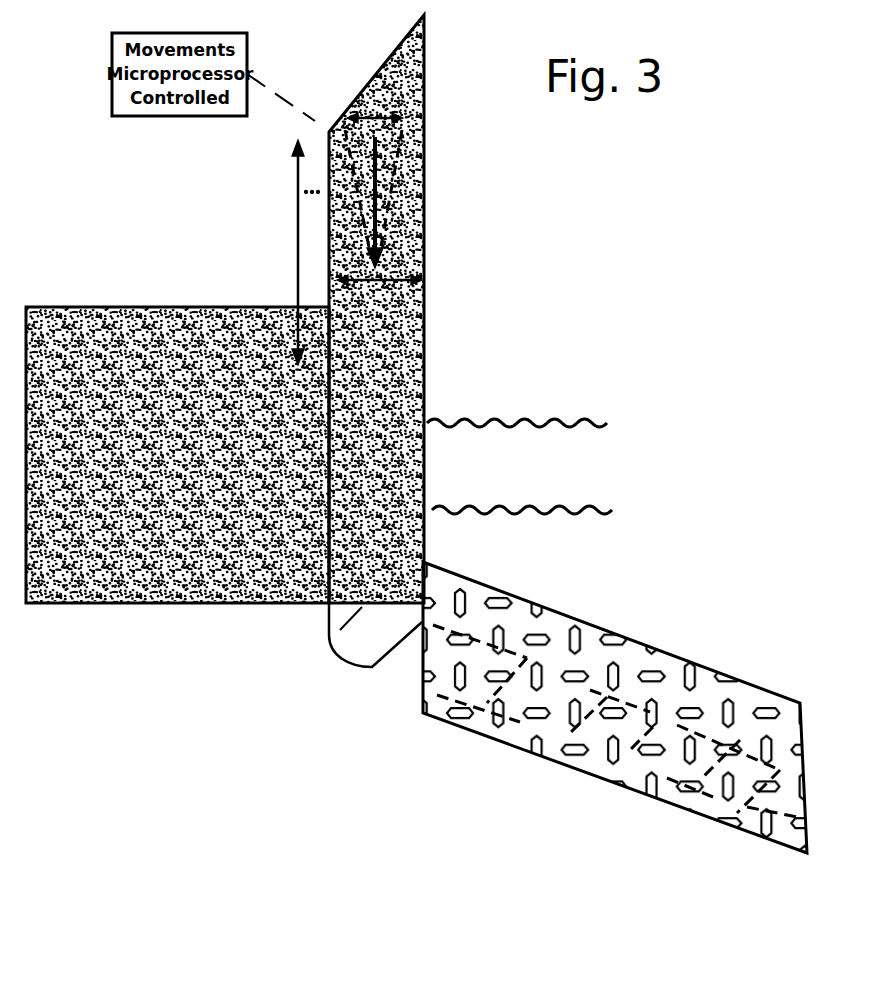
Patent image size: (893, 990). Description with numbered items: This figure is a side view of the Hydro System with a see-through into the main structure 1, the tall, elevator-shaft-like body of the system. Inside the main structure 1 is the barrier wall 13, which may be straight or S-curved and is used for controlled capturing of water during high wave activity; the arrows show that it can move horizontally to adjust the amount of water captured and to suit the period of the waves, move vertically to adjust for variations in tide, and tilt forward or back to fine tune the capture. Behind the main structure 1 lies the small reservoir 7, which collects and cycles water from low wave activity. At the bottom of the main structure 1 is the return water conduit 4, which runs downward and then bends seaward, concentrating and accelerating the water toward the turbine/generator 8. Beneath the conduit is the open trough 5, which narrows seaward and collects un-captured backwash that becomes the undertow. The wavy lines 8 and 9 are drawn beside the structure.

The main structure 1 is at (443, 325).
The return water conduit 4 is at (318, 648).
The open trough 5 is at (682, 641).
The reservoir 7 is at (181, 292).
The turbine/generator 8 is at (539, 501).
The wavy line / vibration 9 is at (534, 413).
The barrier wall 13 is at (417, 190).